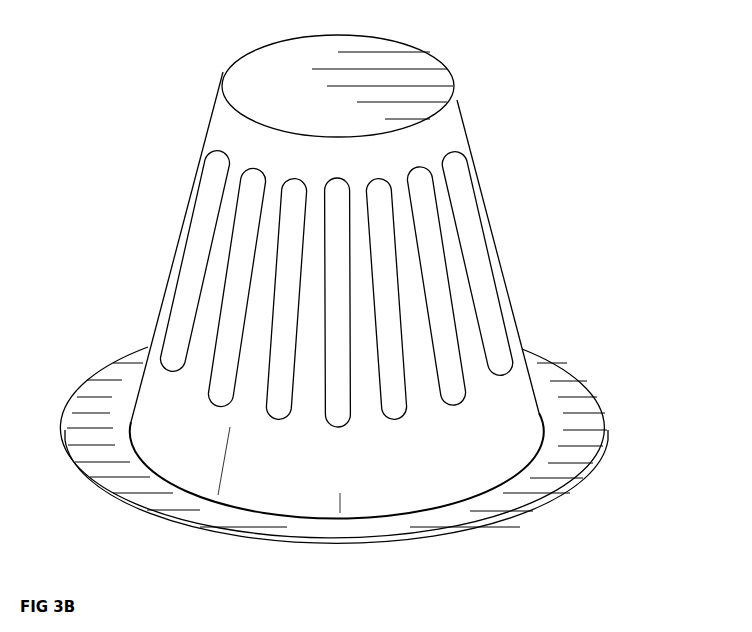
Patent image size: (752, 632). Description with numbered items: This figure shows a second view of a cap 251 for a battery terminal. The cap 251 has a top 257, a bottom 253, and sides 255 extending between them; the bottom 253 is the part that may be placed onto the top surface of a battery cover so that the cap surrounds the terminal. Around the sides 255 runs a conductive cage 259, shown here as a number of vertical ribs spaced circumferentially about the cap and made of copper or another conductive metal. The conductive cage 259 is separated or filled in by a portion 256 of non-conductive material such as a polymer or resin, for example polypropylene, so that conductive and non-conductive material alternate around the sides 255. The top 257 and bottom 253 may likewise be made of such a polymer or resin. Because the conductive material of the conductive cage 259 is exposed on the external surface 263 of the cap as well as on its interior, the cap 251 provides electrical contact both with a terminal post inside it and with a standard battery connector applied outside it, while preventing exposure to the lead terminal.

The cap 251 is at (618, 66).
The bottom 253 is at (593, 390).
The sides 255 is at (497, 233).
The portion 256 is at (415, 228).
The top 257 is at (390, 68).
The conductive cage 259 is at (292, 177).
The external surface 263 is at (529, 321).